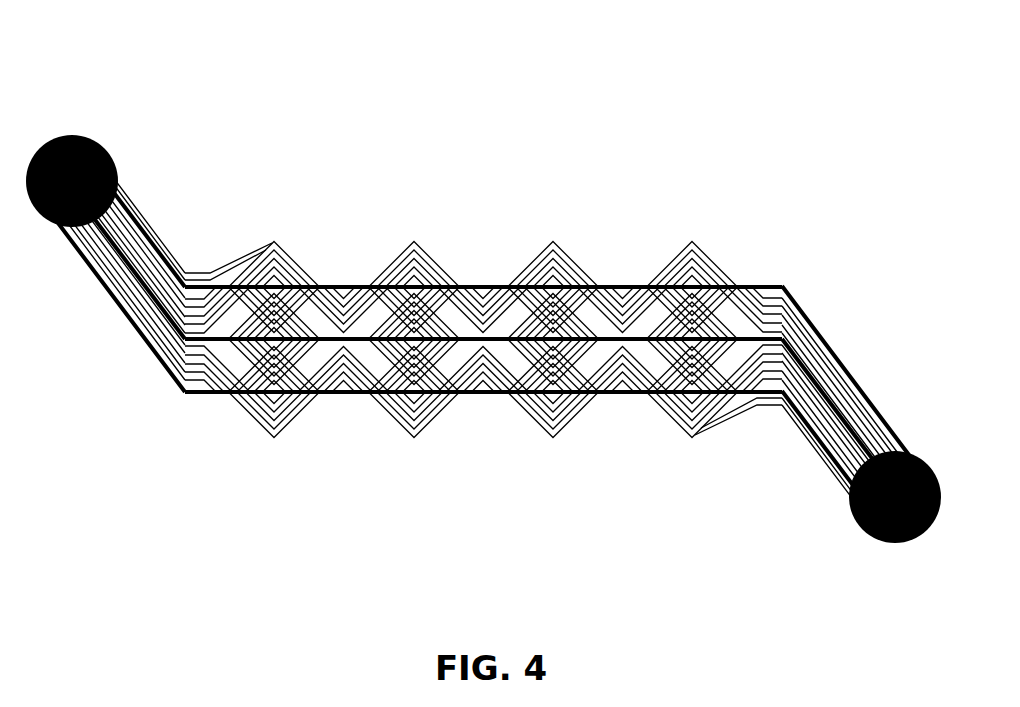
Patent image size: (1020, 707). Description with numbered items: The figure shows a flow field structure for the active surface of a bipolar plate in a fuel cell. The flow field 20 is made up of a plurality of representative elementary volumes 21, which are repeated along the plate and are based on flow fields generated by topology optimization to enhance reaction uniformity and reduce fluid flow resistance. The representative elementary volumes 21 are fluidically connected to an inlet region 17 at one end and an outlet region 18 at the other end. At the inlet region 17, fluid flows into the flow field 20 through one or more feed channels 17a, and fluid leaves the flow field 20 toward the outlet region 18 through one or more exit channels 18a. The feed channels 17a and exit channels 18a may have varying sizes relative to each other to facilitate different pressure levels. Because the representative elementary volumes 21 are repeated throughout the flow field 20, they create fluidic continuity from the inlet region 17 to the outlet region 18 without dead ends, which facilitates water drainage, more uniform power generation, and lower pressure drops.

The flow field 20 is at (226, 119).
The inlet region 17 is at (88, 310).
The outlet region 18 is at (804, 476).
The feed channels 17a is at (173, 254).
The exit channels 18a is at (847, 378).
The representative elementary volumes 21 is at (264, 238).